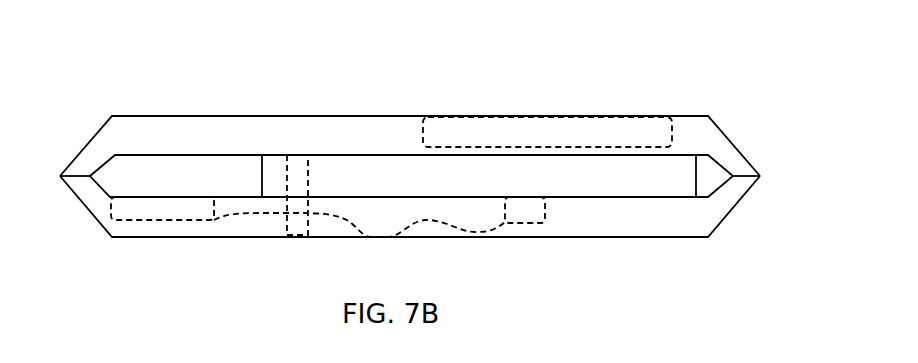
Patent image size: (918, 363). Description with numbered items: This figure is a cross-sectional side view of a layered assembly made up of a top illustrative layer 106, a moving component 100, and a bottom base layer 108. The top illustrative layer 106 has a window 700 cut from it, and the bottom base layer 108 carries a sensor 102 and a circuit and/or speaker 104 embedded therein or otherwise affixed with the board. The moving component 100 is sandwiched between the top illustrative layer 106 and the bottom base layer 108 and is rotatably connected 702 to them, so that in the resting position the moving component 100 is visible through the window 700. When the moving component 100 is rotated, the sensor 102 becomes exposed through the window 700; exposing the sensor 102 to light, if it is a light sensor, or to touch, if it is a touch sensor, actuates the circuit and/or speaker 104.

The moving component 100 is at (395, 170).
The sensor 102 is at (542, 224).
The circuit and/or speaker 104 is at (140, 215).
The top illustrative layer 106 is at (722, 137).
The bottom base layer 108 is at (715, 223).
The window 700 is at (565, 133).
The rotatable connection 702 is at (298, 177).